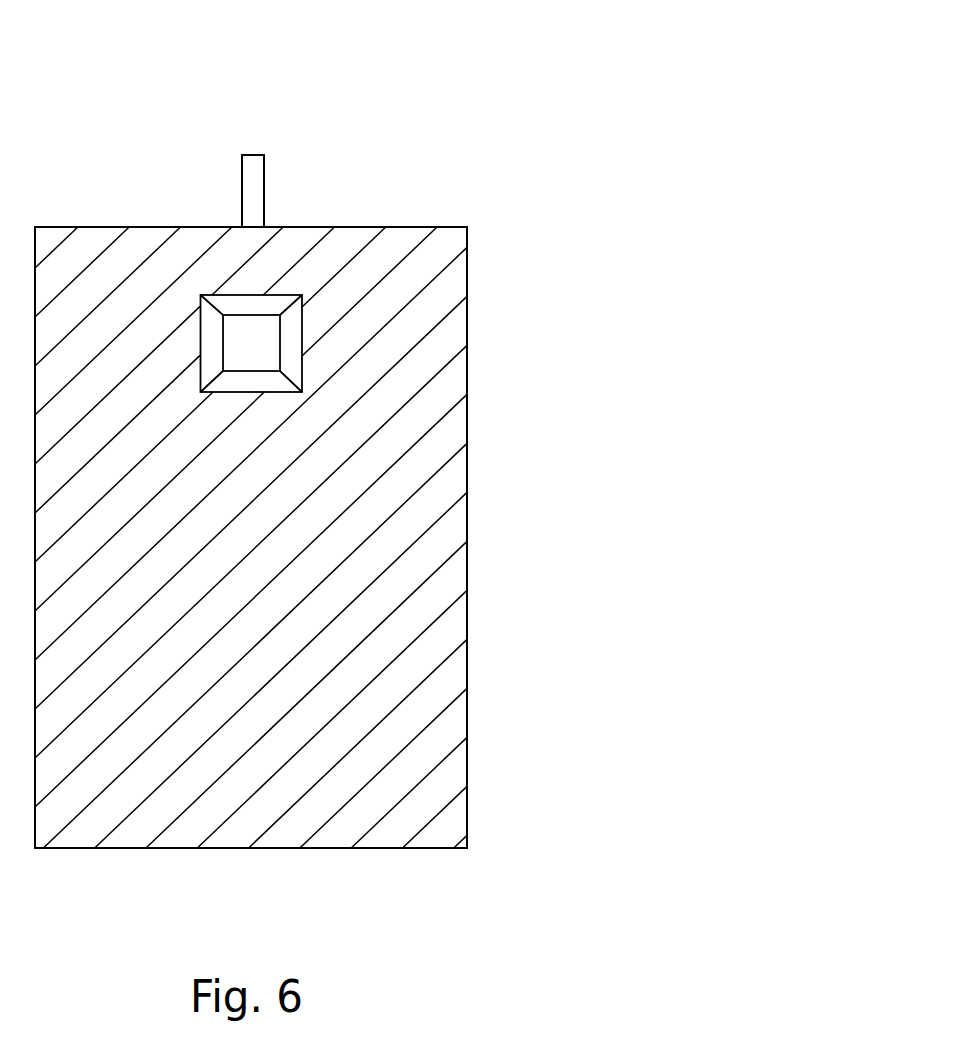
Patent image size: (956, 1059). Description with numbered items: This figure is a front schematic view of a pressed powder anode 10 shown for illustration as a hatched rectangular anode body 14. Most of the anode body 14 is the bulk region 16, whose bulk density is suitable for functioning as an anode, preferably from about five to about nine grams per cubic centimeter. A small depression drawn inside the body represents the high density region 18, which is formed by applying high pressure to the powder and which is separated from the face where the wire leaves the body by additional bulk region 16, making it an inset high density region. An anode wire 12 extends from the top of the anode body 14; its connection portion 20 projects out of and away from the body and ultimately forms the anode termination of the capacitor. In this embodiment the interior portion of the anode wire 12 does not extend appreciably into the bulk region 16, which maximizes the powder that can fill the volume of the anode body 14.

The pressed powder anode 10 is at (495, 186).
The anode wire 12 is at (281, 178).
The anode body 14 is at (467, 658).
The bulk region 16 is at (368, 500).
The high density region 18 is at (250, 350).
The connection portion 20 is at (255, 192).